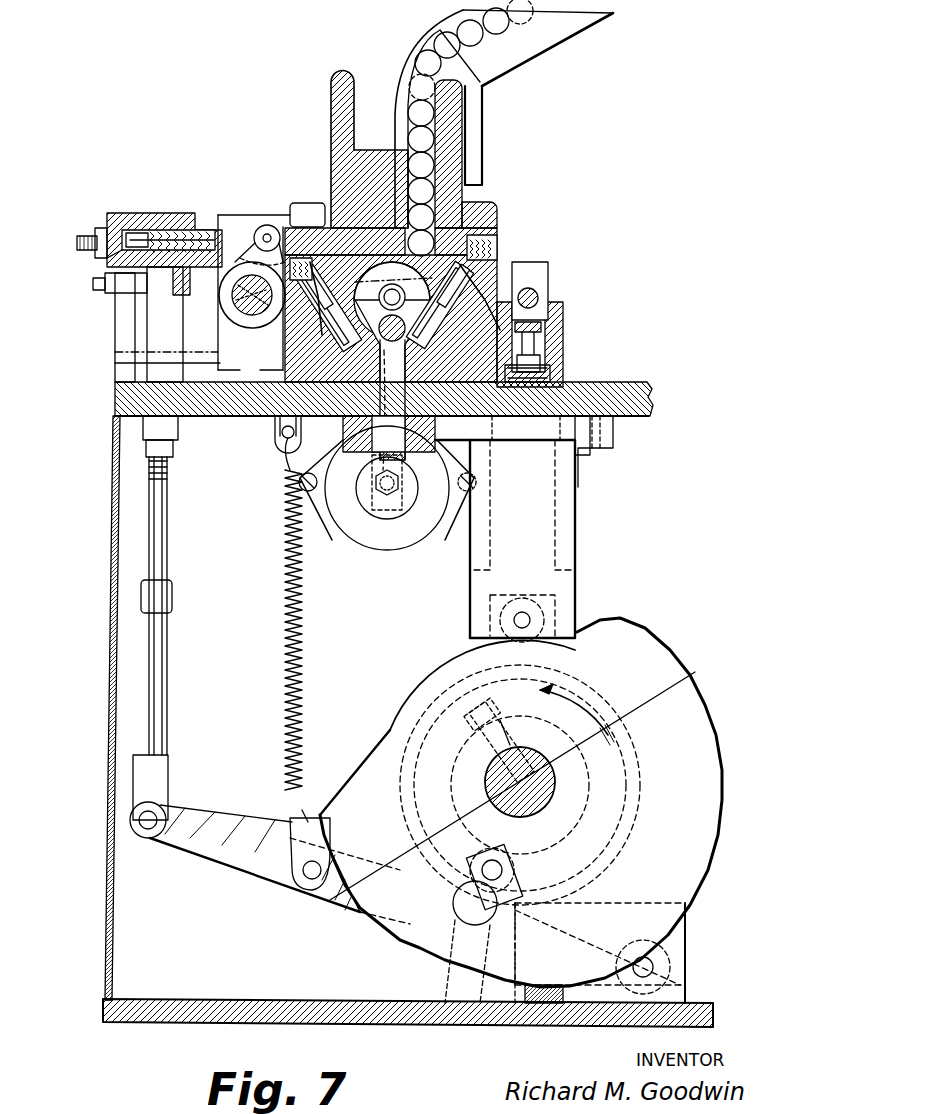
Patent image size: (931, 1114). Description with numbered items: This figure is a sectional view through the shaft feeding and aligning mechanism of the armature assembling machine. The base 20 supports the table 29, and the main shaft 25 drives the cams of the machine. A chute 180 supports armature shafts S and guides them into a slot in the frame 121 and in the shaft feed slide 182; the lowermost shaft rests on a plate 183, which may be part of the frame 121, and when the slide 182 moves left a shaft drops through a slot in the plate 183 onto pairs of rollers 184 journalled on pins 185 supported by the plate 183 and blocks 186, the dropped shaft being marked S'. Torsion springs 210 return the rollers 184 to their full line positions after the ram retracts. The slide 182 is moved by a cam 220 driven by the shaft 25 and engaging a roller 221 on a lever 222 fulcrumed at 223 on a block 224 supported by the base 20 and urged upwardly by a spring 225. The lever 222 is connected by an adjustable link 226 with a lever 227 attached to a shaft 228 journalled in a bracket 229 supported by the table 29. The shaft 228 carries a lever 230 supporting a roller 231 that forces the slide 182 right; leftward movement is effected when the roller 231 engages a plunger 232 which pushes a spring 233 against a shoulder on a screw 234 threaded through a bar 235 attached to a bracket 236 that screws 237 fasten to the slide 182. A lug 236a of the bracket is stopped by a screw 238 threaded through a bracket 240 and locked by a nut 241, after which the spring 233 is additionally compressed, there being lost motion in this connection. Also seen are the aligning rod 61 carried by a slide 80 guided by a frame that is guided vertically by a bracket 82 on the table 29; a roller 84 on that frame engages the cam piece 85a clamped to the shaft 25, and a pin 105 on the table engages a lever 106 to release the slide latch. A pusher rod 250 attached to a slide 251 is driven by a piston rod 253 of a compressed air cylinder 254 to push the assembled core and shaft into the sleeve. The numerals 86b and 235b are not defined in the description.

The base 20 is at (700, 1020).
The shaft 25 is at (532, 770).
The table 29 is at (645, 424).
The aligning arbor or rod 61 is at (540, 300).
The slide 80 is at (550, 278).
The bracket 82 is at (596, 460).
The roller 84 is at (520, 650).
The cam piece 85a is at (672, 672).
The cam disk 86b is at (722, 770).
The pin 105 is at (545, 352).
The lever 106 is at (548, 330).
The frame 121 is at (334, 82).
The chute 180 is at (553, 38).
The slide 182 is at (462, 205).
The plate 183 is at (470, 214).
The rollers 184 is at (488, 300).
The pins 185 is at (500, 262).
The blocks 186 is at (472, 416).
The torsion springs 210 is at (300, 326).
The cam 220 is at (420, 742).
The roller 221 is at (516, 870).
The lever 222 is at (342, 908).
The fulcrum 223 is at (652, 960).
The block 224 is at (683, 990).
The spring 225 is at (286, 665).
The adjustable link 226 is at (167, 545).
The lever 227 is at (228, 306).
The shaft 228 is at (252, 315).
The bracket 229 is at (240, 376).
The lever 230 is at (236, 262).
The roller 231 is at (270, 224).
The plunger 232 is at (213, 228).
The spring 233 is at (180, 213).
The screw 234 is at (82, 250).
The bar 235 is at (107, 218).
The washer 235b is at (107, 258).
The bracket 236 is at (130, 214).
The lug 236a is at (188, 270).
The screws 237 is at (308, 204).
The screw 238 is at (96, 286).
The bracket 240 is at (115, 366).
The nut 241 is at (108, 296).
The pusher rod 250 is at (388, 405).
The slide 251 is at (345, 428).
The piston rod 253 is at (378, 490).
The compressed air cylinder 254 is at (370, 525).
The armature shaft S is at (464, 128).
The dropped armature shaft S' is at (393, 302).